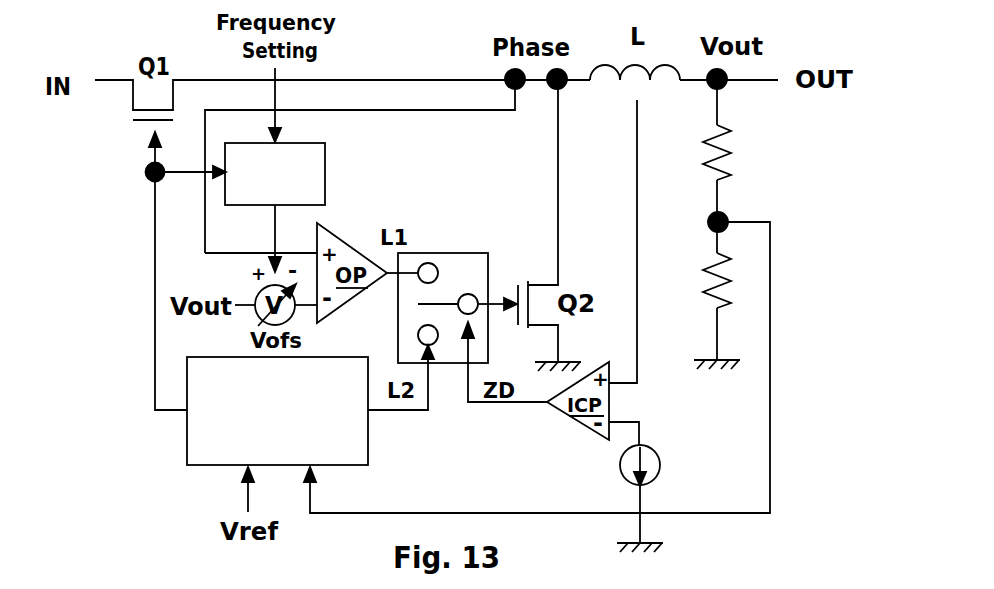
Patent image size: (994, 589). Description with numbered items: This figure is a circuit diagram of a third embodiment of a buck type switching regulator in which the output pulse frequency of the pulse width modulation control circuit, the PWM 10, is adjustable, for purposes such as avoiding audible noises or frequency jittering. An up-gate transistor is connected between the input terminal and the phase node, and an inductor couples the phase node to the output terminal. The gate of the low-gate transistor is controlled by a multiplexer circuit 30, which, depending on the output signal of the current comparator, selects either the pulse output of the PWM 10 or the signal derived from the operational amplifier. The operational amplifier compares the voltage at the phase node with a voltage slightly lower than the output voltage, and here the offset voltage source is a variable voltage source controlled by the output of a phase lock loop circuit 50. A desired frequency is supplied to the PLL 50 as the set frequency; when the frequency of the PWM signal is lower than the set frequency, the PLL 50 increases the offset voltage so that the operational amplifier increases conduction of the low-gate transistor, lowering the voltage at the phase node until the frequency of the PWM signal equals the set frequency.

The PWM control circuit 10 is at (292, 445).
The multiplexer circuit 30 is at (488, 262).
The phase lock loop circuit 50 is at (327, 178).